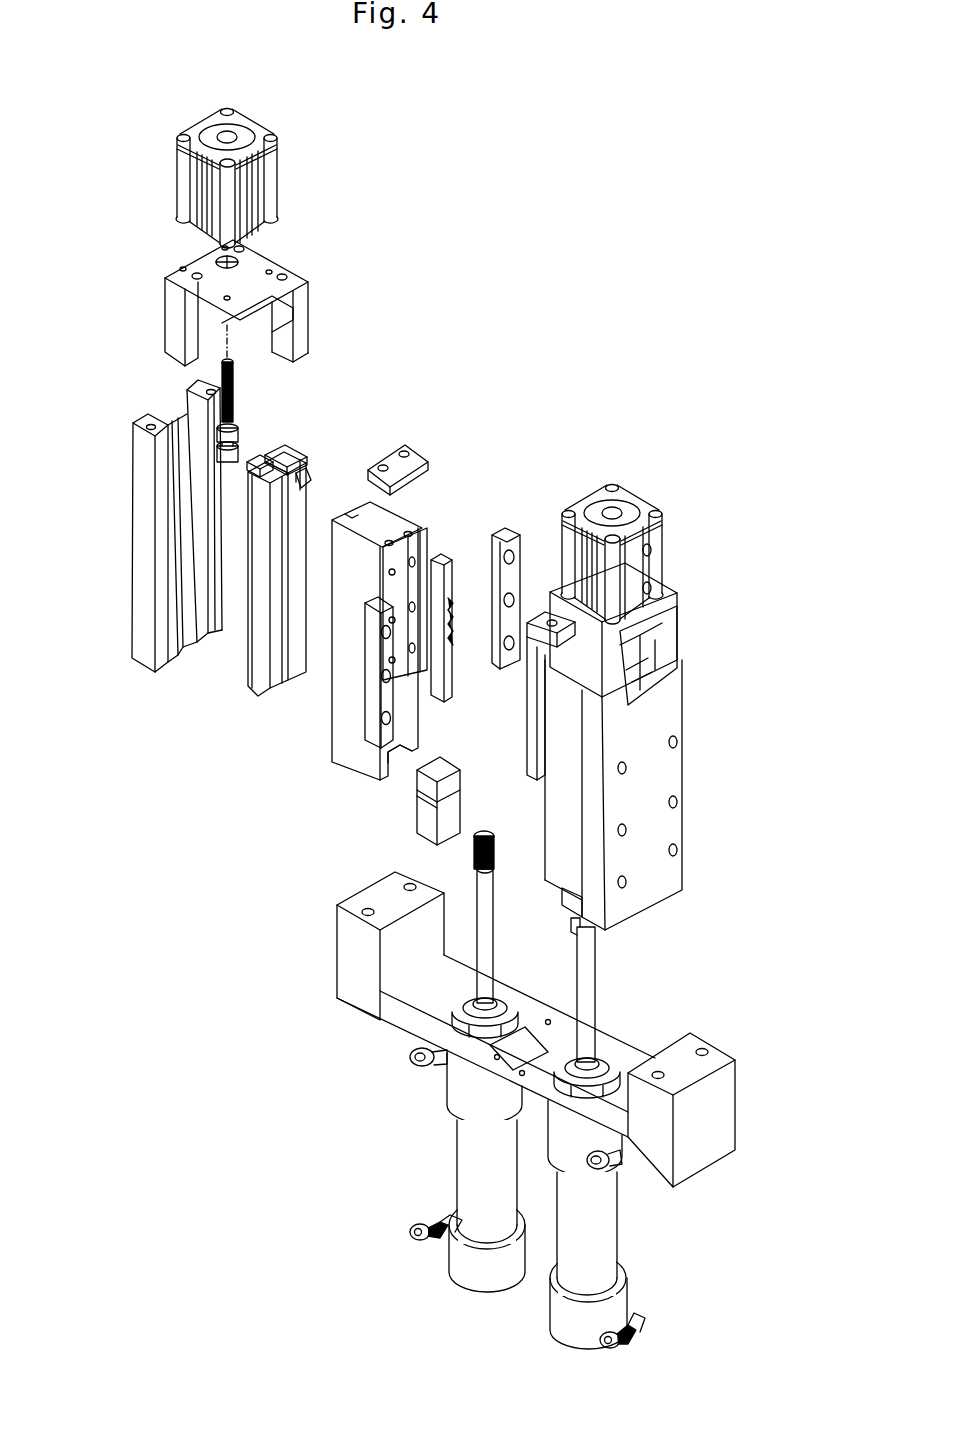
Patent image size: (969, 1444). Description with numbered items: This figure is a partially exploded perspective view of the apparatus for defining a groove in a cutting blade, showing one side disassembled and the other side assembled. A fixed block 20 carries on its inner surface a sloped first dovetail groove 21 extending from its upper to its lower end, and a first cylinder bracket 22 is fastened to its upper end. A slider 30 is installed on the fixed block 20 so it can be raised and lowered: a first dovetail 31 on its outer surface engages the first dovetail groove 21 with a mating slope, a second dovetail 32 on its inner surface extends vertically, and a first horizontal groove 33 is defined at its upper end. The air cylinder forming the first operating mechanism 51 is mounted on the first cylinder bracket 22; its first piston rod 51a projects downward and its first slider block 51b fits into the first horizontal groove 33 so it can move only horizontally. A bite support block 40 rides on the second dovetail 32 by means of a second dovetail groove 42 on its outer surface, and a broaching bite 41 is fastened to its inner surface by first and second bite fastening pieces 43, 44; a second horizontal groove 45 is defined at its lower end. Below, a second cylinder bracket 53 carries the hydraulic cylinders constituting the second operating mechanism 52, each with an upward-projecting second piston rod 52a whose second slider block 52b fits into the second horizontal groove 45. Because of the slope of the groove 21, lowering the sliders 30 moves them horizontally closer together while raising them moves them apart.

The fixed block 20 is at (130, 587).
The first dovetail groove 21 is at (190, 638).
The first cylinder bracket 22 is at (308, 312).
The slider 30 is at (266, 702).
The first dovetail 31 is at (263, 446).
The second dovetail 32 is at (303, 462).
The first horizontal groove 33 is at (299, 472).
The bite support block 40 is at (415, 657).
The broaching bite 41 is at (453, 707).
The second dovetail groove 42 is at (360, 506).
The first bite fastening piece 43 is at (493, 533).
The second bite fastening piece 44 is at (418, 447).
The second horizontal groove 45 is at (397, 763).
The first operating mechanism 51 is at (280, 180).
The first piston rod 51a is at (235, 377).
The first slider block 51b is at (238, 435).
The second operating mechanism 52 is at (460, 1185).
The second piston rod 52a is at (497, 932).
The second slider block 52b is at (425, 820).
The second cylinder bracket 53 is at (362, 1003).